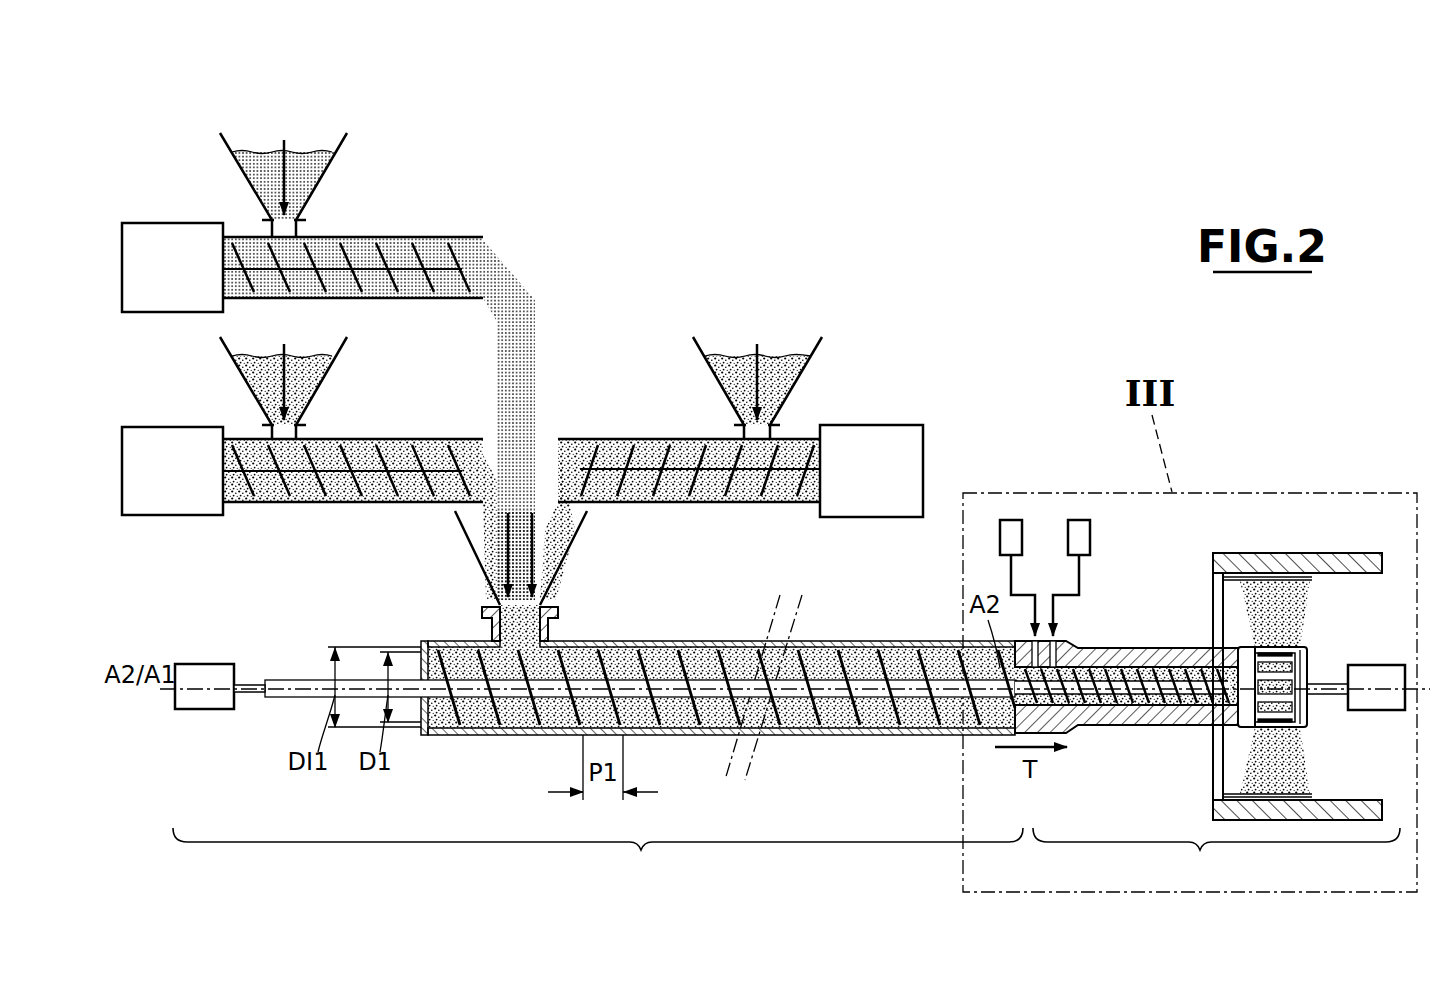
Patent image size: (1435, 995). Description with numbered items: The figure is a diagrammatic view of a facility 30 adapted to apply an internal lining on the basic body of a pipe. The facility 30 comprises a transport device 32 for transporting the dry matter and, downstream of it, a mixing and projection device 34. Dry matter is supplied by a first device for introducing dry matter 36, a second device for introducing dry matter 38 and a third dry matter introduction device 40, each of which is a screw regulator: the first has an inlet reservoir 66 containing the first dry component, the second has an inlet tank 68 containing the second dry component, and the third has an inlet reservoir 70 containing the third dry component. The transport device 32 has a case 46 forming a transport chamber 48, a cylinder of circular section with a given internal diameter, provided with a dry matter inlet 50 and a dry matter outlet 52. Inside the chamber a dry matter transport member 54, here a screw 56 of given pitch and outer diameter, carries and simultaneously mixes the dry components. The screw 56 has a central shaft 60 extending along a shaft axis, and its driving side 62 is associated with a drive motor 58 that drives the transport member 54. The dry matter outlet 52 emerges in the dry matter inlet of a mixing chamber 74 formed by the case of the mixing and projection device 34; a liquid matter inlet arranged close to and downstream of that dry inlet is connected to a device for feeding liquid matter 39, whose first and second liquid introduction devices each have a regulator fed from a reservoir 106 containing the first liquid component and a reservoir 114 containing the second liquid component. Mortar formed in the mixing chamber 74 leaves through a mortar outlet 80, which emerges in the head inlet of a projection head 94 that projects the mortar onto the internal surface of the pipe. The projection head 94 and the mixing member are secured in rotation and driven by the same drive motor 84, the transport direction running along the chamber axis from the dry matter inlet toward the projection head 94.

The facility 30 is at (1012, 248).
The transport device 32 is at (598, 857).
The mixing and projection device 34 is at (1216, 857).
The first device for introducing dry matter 36 is at (400, 426).
The second device for introducing dry matter 38 is at (868, 390).
The device for feeding liquid matter 39 is at (1046, 511).
The third dry matter introduction device 40 is at (480, 192).
The case 46 is at (698, 641).
The transport chamber 48 is at (588, 655).
The dry matter inlet 50 is at (478, 596).
The dry matter outlet 52 is at (1005, 727).
The dry matter transport member 54 is at (478, 705).
The screw 56 is at (747, 645).
The drive motor 58 is at (205, 665).
The central shaft 60 is at (280, 697).
The driving side 62 is at (243, 705).
The inlet reservoir 66 is at (306, 372).
The inlet tank 68 is at (784, 365).
The inlet reservoir 70 is at (306, 162).
The mixing chamber 74 is at (1125, 672).
The mortar outlet 80 is at (1215, 706).
The drive motor 84 is at (1370, 700).
The projection head 94 is at (1310, 641).
The reservoir 106 is at (1010, 520).
The reservoir 114 is at (1079, 520).